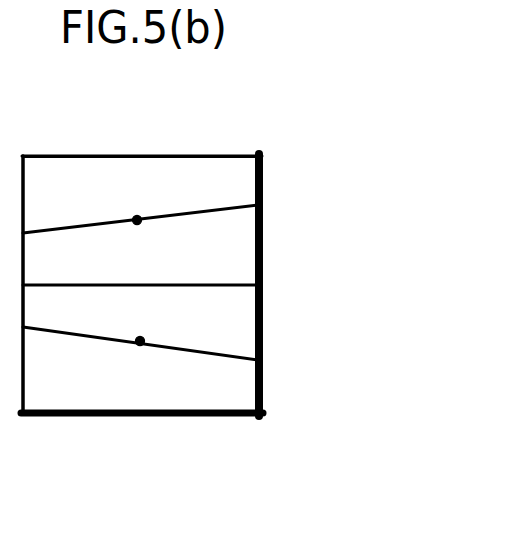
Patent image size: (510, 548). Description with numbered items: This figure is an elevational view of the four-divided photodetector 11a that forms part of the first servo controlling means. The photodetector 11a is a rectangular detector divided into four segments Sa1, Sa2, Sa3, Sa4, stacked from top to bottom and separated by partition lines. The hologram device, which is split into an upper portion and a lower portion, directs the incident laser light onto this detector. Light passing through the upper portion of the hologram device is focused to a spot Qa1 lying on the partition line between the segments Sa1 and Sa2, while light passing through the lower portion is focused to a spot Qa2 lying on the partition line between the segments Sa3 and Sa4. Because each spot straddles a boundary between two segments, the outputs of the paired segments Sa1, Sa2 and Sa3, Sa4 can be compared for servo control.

The four-divided photodetector 11a is at (163, 150).
The segment Sa1 is at (252, 182).
The segment Sa2 is at (250, 258).
The segment Sa3 is at (247, 331).
The segment Sa4 is at (243, 391).
The spot Qa1 is at (137, 220).
The spot Qa2 is at (140, 341).